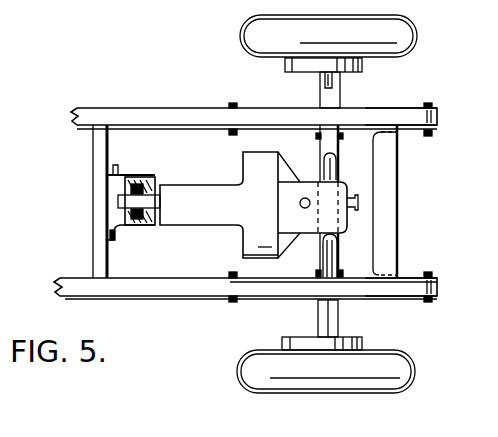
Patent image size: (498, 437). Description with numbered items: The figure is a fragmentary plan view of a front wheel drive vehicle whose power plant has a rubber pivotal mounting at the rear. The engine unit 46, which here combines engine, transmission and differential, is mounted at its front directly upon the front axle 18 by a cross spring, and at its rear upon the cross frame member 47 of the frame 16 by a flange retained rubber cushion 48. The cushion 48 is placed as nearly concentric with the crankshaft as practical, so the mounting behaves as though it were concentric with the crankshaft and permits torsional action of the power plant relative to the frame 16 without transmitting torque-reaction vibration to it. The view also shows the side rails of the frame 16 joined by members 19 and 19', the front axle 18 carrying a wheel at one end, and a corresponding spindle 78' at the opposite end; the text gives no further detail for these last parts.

The frame 16 is at (117, 114).
The cross frame member 47 is at (95, 153).
The flange retained rubber cushion 48 is at (142, 176).
The engine unit 46 is at (247, 237).
The front axle 18 is at (337, 97).
The lower wheel spindle 78' is at (329, 346).
The upper cross member 19 is at (412, 97).
The lower cross member 19' is at (425, 262).